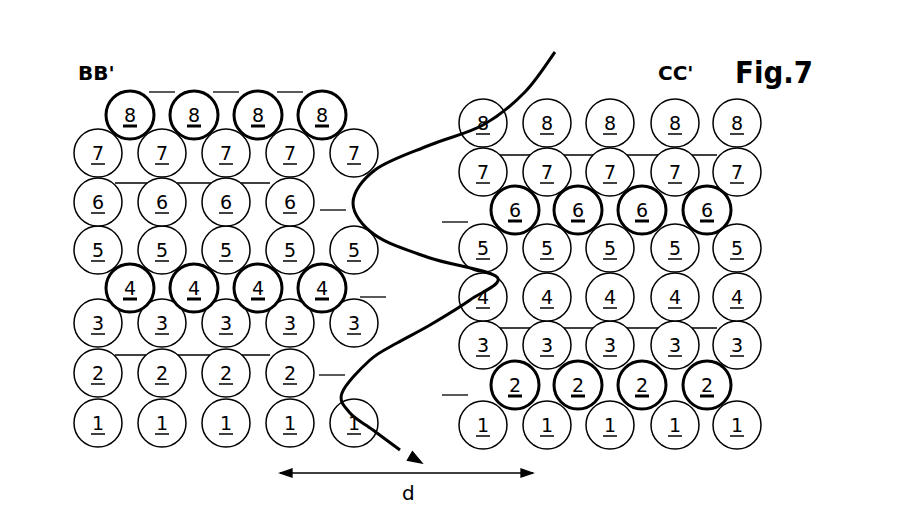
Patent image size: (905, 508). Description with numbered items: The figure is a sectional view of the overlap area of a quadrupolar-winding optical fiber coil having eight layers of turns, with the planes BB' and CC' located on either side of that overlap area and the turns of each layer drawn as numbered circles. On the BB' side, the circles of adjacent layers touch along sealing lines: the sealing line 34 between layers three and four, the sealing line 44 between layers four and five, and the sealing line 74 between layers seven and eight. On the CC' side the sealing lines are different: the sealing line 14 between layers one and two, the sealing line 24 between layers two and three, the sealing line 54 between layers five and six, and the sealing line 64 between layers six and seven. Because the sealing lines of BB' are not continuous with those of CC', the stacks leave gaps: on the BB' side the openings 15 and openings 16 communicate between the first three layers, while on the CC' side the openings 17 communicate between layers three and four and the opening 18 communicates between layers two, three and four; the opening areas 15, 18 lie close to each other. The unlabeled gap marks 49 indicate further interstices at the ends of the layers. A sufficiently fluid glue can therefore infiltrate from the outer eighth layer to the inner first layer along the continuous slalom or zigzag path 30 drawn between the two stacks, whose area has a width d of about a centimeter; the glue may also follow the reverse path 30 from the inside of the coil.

The sealing line 14 is at (752, 397).
The opening 15 is at (332, 282).
The opening 16 is at (193, 259).
The opening 17 is at (607, 233).
The opening 18 is at (455, 298).
The sealing line 24 is at (750, 372).
The continuous path 30 is at (547, 73).
The sealing line 34 is at (78, 297).
The sealing line 44 is at (82, 276).
The gap position in layer 49 is at (267, 184).
The sealing line 54 is at (750, 222).
The sealing line 64 is at (755, 193).
The sealing line 74 is at (90, 128).